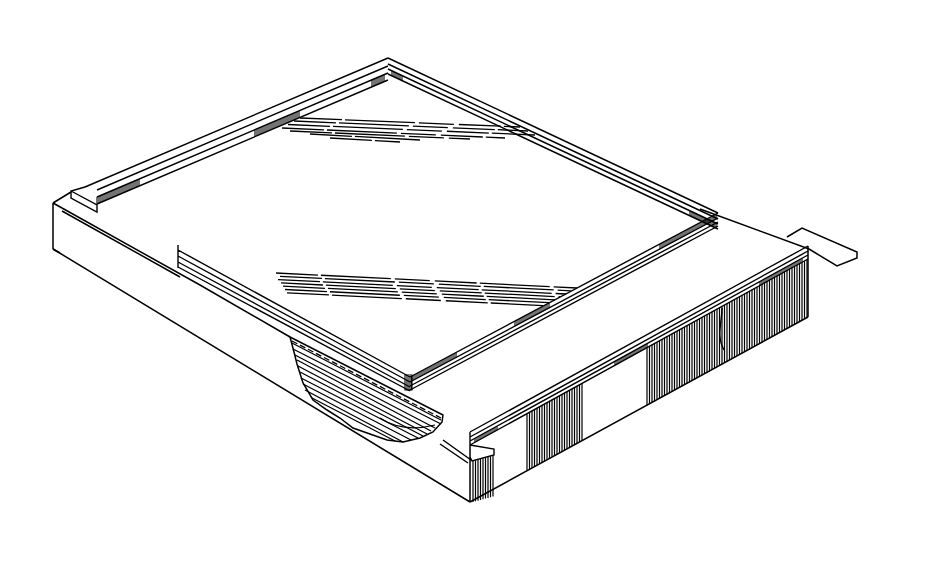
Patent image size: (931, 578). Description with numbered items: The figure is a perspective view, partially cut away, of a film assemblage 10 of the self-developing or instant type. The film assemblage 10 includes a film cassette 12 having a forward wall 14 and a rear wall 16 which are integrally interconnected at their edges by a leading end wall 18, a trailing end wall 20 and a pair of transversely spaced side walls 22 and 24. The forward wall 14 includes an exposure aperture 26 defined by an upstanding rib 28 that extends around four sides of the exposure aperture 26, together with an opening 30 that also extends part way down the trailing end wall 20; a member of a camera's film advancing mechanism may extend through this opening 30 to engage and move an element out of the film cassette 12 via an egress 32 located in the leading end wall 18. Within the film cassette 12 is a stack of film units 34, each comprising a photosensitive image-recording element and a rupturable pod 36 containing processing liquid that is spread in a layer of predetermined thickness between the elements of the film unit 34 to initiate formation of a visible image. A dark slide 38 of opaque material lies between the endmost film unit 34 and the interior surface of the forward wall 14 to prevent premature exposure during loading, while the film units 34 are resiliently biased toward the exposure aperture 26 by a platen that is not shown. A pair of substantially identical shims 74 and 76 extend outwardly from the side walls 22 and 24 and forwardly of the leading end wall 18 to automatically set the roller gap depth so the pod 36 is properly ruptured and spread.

The film assemblage 10 is at (205, 112).
The film cassette 12 is at (496, 94).
The forward wall 14 is at (722, 236).
The rear wall 16 is at (270, 387).
The leading end wall 18 is at (613, 405).
The trailing end wall 20 is at (120, 174).
The side wall 22 is at (182, 311).
The side wall 24 is at (570, 134).
The exposure aperture 26 is at (308, 148).
The upstanding rib 28 is at (545, 309).
The opening 30 is at (93, 217).
The egress 32 is at (724, 350).
The film unit 34 is at (355, 389).
The rupturable container or pod 36 is at (415, 425).
The dark slide 38 is at (407, 229).
The shim 74 is at (484, 448).
The shim 76 is at (832, 248).